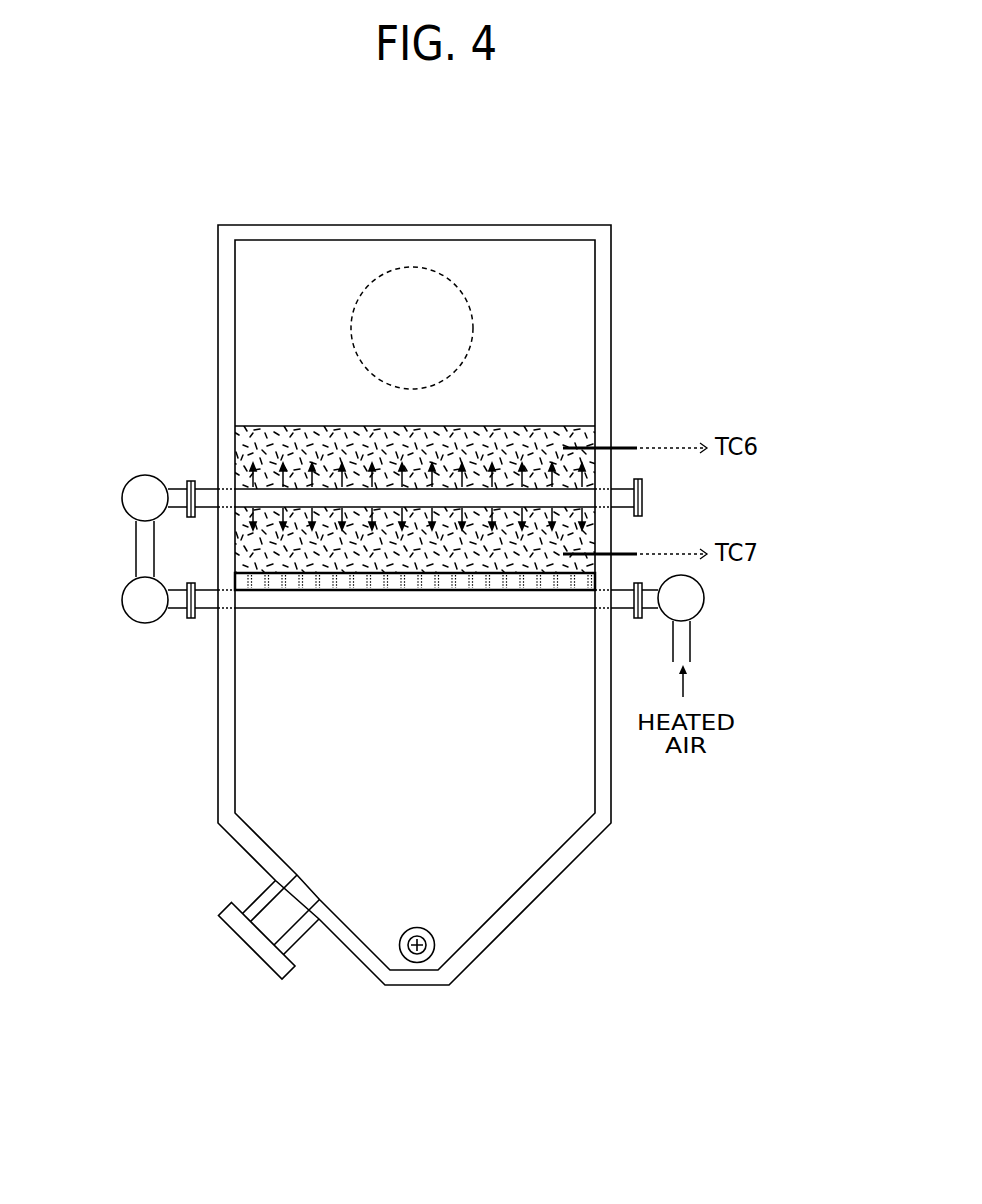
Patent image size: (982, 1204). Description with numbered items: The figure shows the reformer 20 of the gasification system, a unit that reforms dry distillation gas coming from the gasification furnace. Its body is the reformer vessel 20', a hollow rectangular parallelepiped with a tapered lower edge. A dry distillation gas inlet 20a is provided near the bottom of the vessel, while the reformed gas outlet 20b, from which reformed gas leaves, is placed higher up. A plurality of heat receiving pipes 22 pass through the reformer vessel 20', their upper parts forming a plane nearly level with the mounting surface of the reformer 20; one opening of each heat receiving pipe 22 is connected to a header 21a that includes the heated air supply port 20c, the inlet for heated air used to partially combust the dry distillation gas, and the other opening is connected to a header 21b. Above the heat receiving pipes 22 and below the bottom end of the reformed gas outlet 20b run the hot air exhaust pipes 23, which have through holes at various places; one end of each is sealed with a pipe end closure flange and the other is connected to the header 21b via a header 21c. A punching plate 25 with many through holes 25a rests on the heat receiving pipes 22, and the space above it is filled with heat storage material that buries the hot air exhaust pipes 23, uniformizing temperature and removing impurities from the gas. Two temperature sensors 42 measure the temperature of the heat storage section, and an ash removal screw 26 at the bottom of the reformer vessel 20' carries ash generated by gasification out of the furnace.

The reformer 20 is at (481, 553).
The reformer vessel 20' is at (450, 605).
The dry distillation gas inlet 20a is at (252, 904).
The reformed gas outlet 20b is at (411, 267).
The heated air supply port 20c is at (692, 640).
The header 21a is at (705, 598).
The header 21b is at (122, 604).
The header 21c is at (122, 502).
The heat receiving pipe 22 is at (507, 602).
The hot air exhaust pipe 23 is at (508, 497).
The punching plate 25 is at (405, 591).
The through hole 25a is at (263, 591).
The ash removal screw 26 is at (417, 963).
The temperature sensor 42 is at (618, 444).